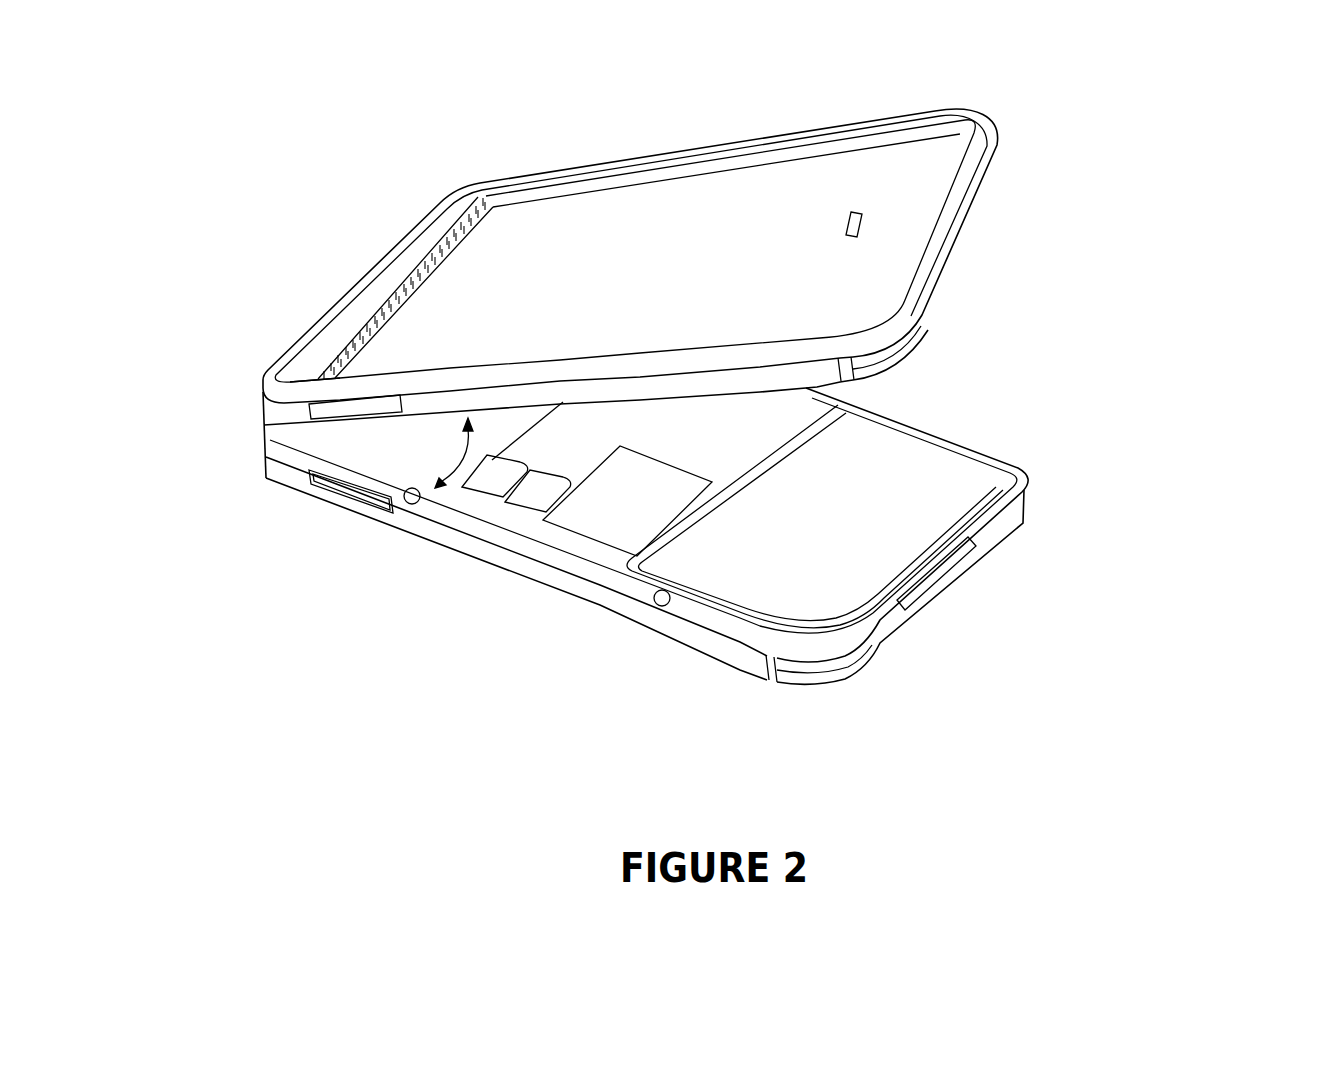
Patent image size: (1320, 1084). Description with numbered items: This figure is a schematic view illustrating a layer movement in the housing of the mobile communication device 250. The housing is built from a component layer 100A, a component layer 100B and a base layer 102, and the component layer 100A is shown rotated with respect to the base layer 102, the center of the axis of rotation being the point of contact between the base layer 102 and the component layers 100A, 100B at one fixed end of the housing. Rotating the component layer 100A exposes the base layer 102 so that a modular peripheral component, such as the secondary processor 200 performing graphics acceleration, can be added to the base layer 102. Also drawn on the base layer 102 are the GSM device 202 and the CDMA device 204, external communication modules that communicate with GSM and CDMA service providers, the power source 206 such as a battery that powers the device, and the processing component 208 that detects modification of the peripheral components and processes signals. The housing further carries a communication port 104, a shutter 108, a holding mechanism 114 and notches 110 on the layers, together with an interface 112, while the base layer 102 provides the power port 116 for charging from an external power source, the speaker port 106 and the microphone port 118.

The component layer 100A is at (973, 186).
The component layer 100B is at (982, 557).
The base layer 102 is at (1000, 521).
The communication port 104 is at (497, 160).
The speaker port 106 is at (345, 485).
The shutter 108 is at (950, 133).
The notch 110 is at (880, 340).
The interface 112 is at (933, 574).
The holding mechanism 114 is at (947, 250).
The power port 116 is at (655, 606).
The microphone port 118 is at (410, 503).
The secondary processor 200 is at (587, 533).
The GSM device 202 is at (520, 502).
The CDMA device 204 is at (470, 488).
The power source 206 is at (753, 607).
The processing component 208 is at (355, 413).
The mobile communication device 250 is at (841, 773).